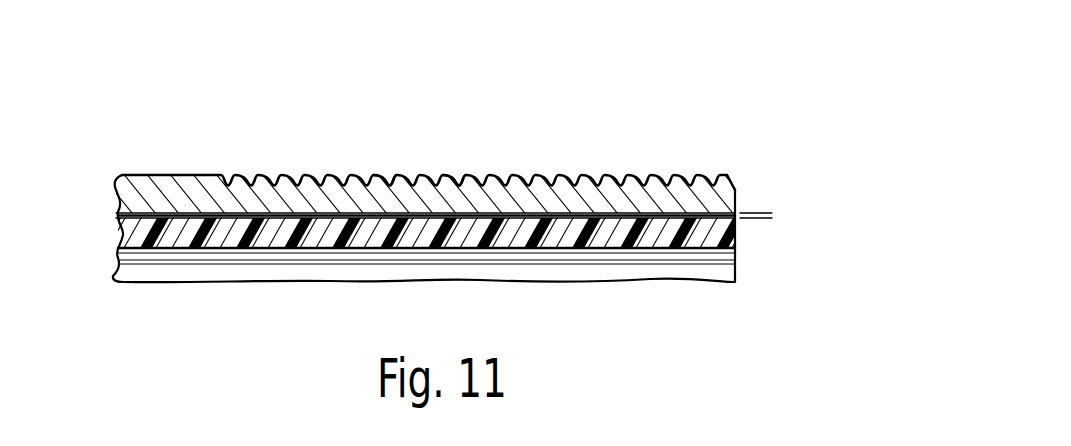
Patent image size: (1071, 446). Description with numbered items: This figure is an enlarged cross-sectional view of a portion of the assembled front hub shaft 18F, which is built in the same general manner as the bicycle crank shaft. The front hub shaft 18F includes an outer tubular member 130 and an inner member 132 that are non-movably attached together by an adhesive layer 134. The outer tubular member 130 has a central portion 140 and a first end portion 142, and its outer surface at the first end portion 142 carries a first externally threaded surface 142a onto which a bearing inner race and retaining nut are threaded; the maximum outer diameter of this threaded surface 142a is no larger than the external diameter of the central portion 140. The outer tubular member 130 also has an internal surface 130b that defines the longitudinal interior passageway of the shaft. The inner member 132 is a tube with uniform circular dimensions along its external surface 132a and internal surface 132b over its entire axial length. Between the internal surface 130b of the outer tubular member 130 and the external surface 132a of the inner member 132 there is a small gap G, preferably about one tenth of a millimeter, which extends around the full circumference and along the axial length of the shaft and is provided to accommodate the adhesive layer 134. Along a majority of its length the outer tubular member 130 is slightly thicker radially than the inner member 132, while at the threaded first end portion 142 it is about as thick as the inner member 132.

The front hub shaft 18F is at (403, 192).
The outer tubular member 130 is at (404, 150).
The central portion 140 is at (158, 185).
The internal surface 130b is at (288, 222).
The first end portion 142 is at (389, 180).
The first externally threaded surface 142a is at (458, 186).
The adhesive layer 134 is at (230, 217).
The inner member 132 is at (391, 285).
The external surface 132a is at (404, 212).
The internal surface 132b is at (582, 252).
The gap G is at (763, 231).